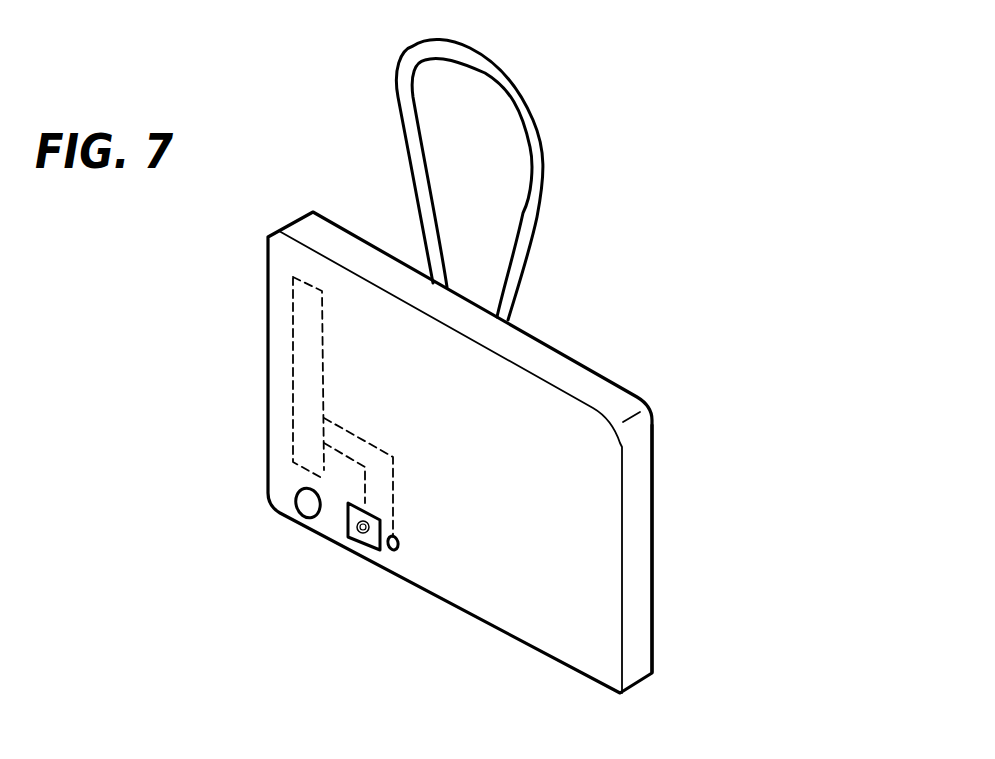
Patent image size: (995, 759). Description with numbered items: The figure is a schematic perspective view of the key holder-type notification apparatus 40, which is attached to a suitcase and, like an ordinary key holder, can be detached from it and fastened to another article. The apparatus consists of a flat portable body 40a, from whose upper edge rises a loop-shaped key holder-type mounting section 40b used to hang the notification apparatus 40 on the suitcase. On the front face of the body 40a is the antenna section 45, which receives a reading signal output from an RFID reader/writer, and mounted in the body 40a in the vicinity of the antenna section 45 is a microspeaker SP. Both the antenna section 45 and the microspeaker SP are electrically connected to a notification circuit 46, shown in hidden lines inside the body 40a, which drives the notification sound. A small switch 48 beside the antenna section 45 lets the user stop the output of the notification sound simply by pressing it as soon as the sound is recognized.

The notification apparatus 40 is at (585, 338).
The portable body 40a is at (649, 570).
The key holder-type mounting section 40b is at (527, 127).
The antenna section 45 is at (360, 540).
The notification circuit 46 is at (325, 291).
The switch 48 is at (390, 553).
The microspeaker SP is at (303, 525).